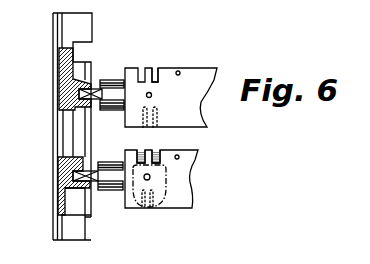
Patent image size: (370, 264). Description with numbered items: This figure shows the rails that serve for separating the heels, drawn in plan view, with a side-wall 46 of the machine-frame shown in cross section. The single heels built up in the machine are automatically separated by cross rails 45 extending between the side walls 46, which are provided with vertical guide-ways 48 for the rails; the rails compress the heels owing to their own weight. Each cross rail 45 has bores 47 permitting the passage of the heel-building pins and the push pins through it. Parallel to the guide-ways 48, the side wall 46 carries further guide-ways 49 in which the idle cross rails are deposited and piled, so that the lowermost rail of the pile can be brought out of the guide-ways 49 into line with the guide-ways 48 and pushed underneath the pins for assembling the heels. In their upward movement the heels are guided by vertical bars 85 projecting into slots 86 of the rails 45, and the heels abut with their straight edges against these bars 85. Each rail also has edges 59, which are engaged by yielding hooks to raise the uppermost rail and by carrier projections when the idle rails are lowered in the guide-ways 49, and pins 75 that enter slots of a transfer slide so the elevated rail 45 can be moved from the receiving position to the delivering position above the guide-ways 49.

The cross rail 45 is at (201, 67).
The side wall 46 is at (57, 137).
The bore 47 is at (152, 95).
The vertical guide-way 48 is at (58, 177).
The guide-way 49 is at (59, 92).
The edge 59 is at (101, 162).
The pin 75 is at (90, 83).
The vertical bar 85 is at (157, 150).
The slot 86 is at (158, 68).